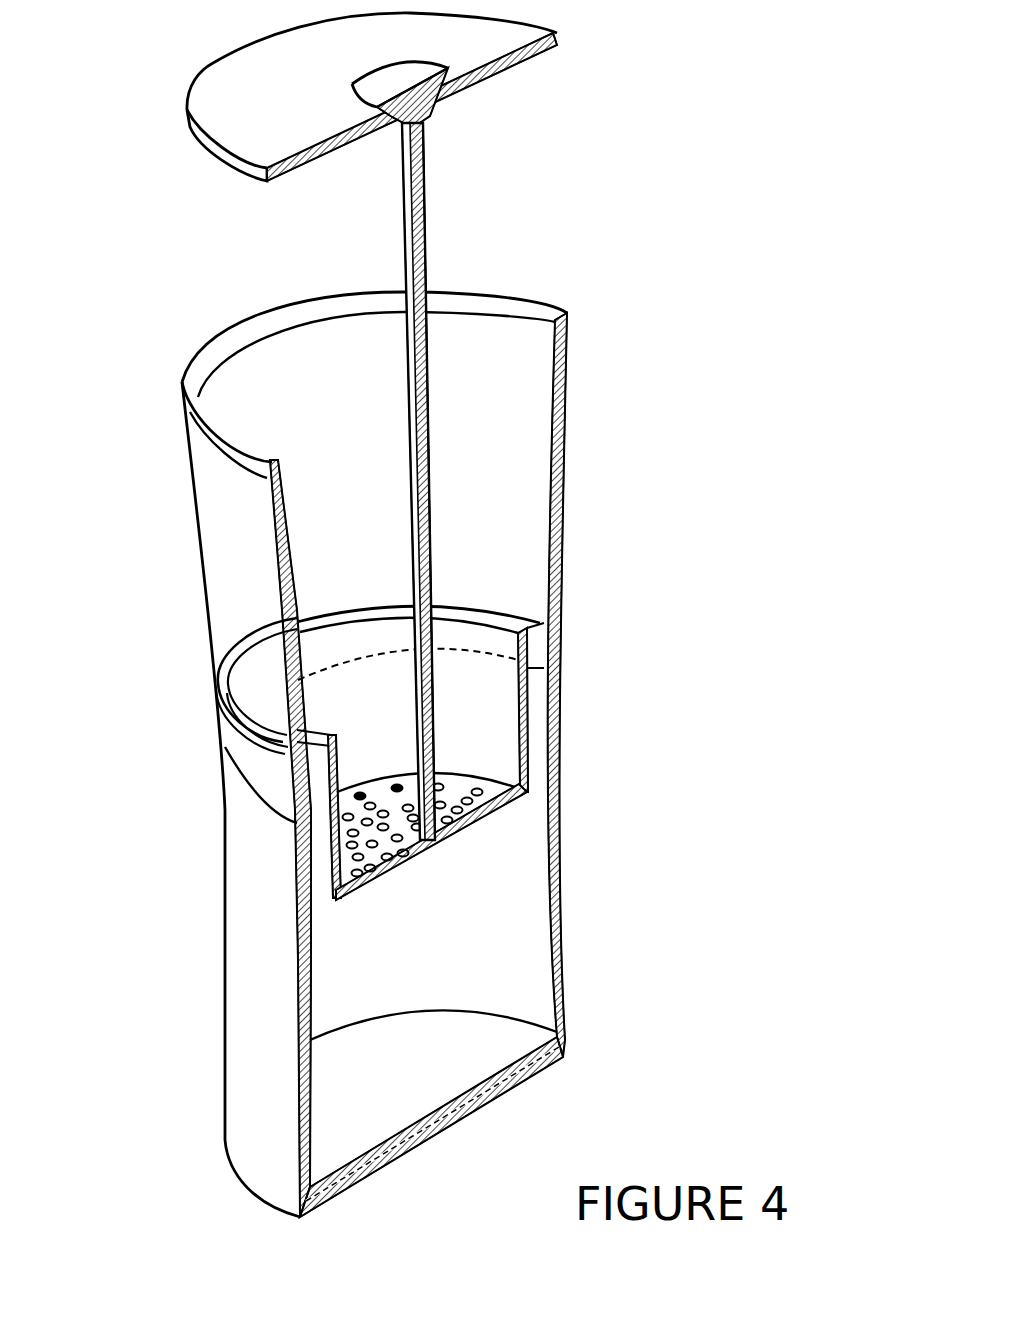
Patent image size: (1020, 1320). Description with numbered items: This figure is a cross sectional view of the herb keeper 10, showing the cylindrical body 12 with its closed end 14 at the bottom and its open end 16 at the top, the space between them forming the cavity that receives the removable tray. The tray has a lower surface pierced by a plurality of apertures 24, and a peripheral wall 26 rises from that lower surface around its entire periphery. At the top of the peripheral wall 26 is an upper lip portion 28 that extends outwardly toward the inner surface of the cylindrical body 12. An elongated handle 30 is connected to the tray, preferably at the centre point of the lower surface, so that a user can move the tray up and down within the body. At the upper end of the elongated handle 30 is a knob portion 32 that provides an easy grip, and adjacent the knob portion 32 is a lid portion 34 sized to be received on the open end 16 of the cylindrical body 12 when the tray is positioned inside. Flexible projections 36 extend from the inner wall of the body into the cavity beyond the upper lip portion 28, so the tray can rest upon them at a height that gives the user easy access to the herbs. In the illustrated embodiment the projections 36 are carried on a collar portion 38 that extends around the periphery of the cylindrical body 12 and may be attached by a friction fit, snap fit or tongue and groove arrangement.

The herb keeper 10 is at (685, 148).
The cylindrical body 12 is at (200, 517).
The closed end 14 is at (272, 1198).
The open end 16 is at (208, 350).
The apertures 24 is at (397, 785).
The peripheral wall 26 is at (516, 731).
The upper lip portion 28 is at (420, 716).
The elongated handle 30 is at (408, 395).
The knob portion 32 is at (410, 77).
The lid portion 34 is at (220, 58).
The flexible projections 36 is at (262, 740).
The collar portion 38 is at (277, 787).